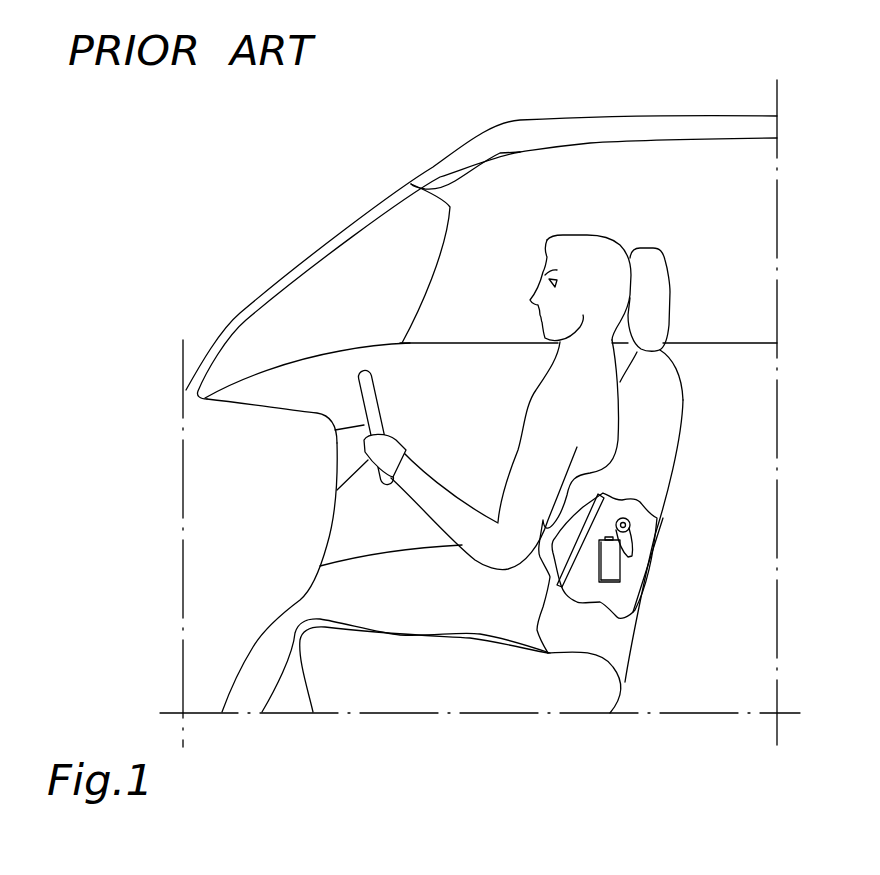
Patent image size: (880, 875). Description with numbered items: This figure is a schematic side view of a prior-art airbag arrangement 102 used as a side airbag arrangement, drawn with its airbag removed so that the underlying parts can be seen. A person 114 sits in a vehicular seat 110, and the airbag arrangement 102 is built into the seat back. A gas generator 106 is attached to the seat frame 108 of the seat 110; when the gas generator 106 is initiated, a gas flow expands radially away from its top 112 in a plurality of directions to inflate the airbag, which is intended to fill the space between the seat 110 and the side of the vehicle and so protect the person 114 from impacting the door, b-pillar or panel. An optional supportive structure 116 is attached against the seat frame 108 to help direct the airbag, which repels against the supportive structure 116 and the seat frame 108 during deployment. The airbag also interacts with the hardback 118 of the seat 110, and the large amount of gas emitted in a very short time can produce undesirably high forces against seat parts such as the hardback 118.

The airbag arrangement 102 is at (662, 550).
The gas generator 106 is at (612, 565).
The seat frame 108 is at (638, 603).
The vehicular seat 110 is at (683, 362).
The top of the gas generator 112 is at (627, 530).
The person 114 is at (550, 421).
The supportive structure 116 is at (567, 542).
The hardback 118 is at (647, 588).